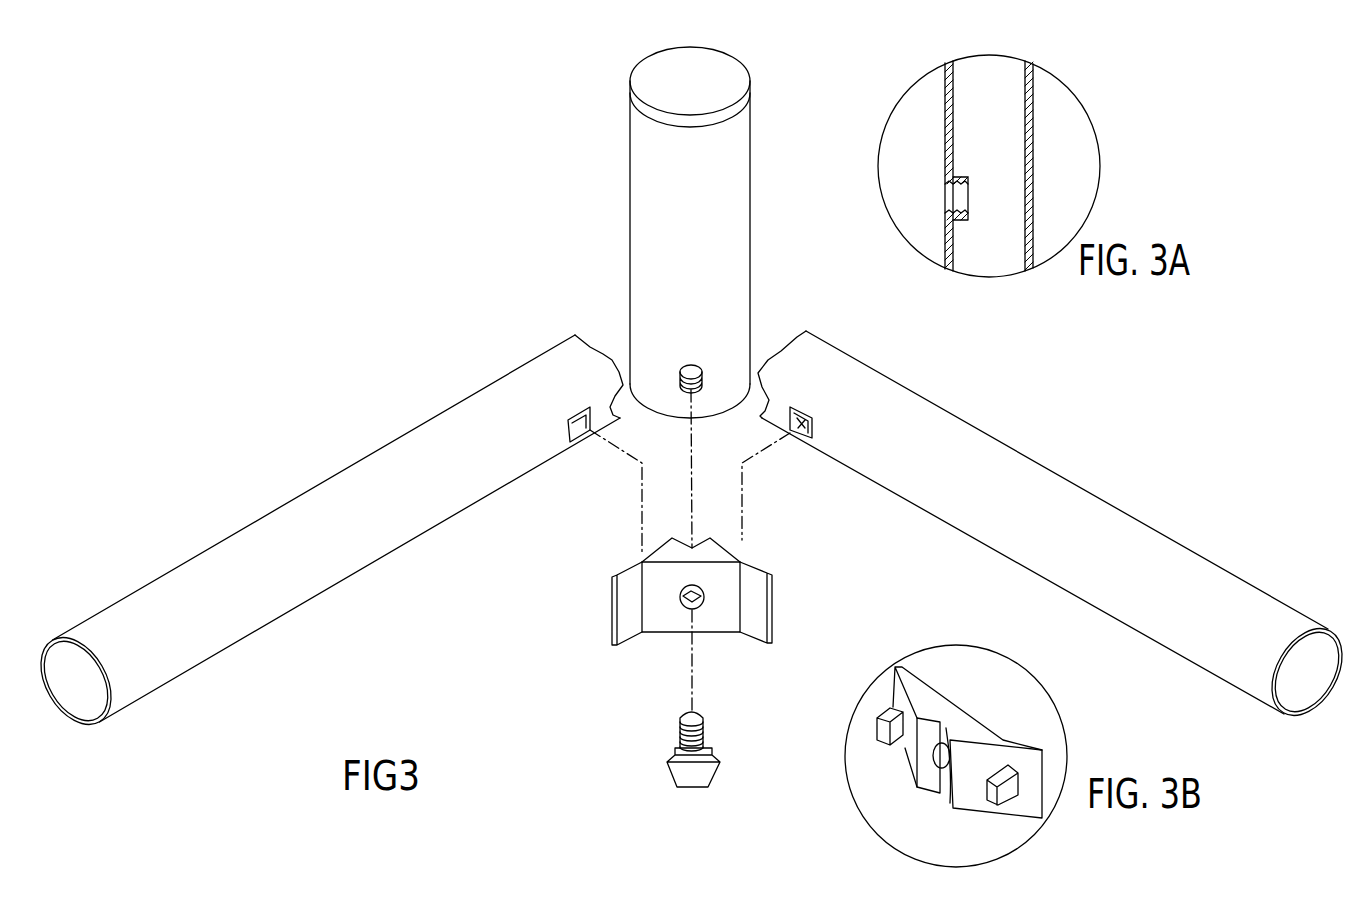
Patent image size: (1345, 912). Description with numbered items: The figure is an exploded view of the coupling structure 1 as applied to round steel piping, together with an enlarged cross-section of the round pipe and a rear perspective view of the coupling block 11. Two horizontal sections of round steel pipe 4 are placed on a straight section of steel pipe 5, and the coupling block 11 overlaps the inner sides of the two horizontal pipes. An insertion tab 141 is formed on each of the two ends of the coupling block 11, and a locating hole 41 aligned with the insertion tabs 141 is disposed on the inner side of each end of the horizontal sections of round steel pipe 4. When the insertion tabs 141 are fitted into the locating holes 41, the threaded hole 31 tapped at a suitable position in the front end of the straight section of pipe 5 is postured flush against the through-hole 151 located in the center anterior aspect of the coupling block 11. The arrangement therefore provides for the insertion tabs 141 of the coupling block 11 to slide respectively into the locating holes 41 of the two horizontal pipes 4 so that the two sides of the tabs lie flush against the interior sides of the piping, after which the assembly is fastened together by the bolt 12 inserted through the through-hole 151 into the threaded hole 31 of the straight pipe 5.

In FIG. 3, the coupling structure 1 is at (617, 732).
In FIG. 3, the horizontal section of round steel pipe 4 is at (315, 525).
In FIG. 3, the straight section of steel pipe 5 is at (673, 273).
In FIG. 3, the coupling block 11 is at (686, 620).
In FIG. 3B, the coupling block 11 is at (945, 734).
In FIG. 3, the bolt 12 is at (688, 775).
In FIG. 3, the threaded hole 31 is at (770, 472).
In FIG. 3, the locating hole 41 is at (575, 432).
In FIG. 3B, the insertion tab 141 is at (880, 728).
In FIG. 3, the through-hole 151 is at (687, 601).
In FIG. 3B, the through-hole 151 is at (938, 762).